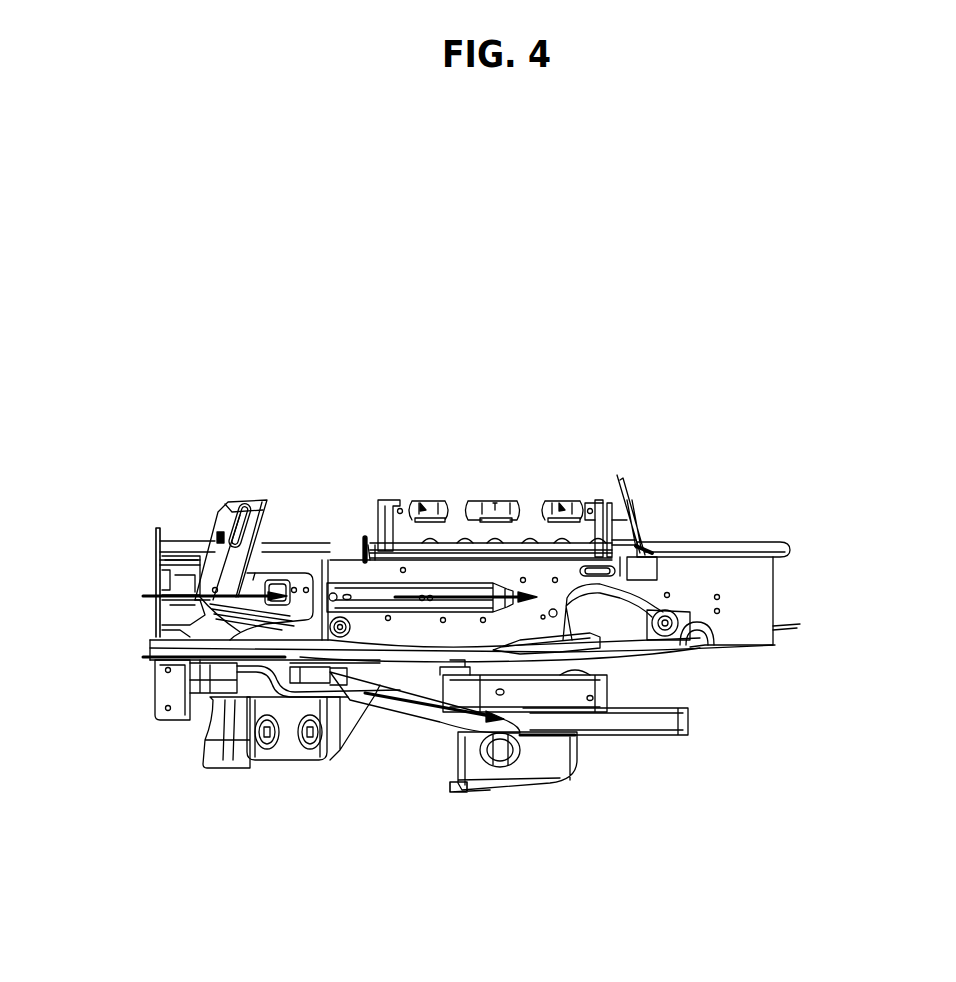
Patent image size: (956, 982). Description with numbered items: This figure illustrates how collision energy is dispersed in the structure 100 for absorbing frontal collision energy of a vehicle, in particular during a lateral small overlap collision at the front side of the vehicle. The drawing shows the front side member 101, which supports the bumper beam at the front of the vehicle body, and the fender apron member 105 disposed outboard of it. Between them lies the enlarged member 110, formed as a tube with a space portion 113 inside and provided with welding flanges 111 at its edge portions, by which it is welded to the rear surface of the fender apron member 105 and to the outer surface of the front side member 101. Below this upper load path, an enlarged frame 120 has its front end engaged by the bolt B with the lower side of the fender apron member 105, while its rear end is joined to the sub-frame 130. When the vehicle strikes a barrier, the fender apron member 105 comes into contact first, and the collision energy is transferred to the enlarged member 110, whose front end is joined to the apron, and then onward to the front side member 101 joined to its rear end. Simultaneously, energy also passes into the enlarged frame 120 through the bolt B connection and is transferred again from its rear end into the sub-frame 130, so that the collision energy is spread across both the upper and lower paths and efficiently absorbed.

The structure for absorbing frontal collision energy 100 is at (492, 253).
The front side member 101 is at (487, 577).
The fender apron member 105 is at (222, 568).
The enlarged member 110 is at (318, 572).
The welding flanges 111 is at (398, 508).
The space portion 113 is at (274, 572).
The enlarged frame 120 is at (153, 640).
The sub-frame 130 is at (417, 707).
The bolt B is at (150, 625).